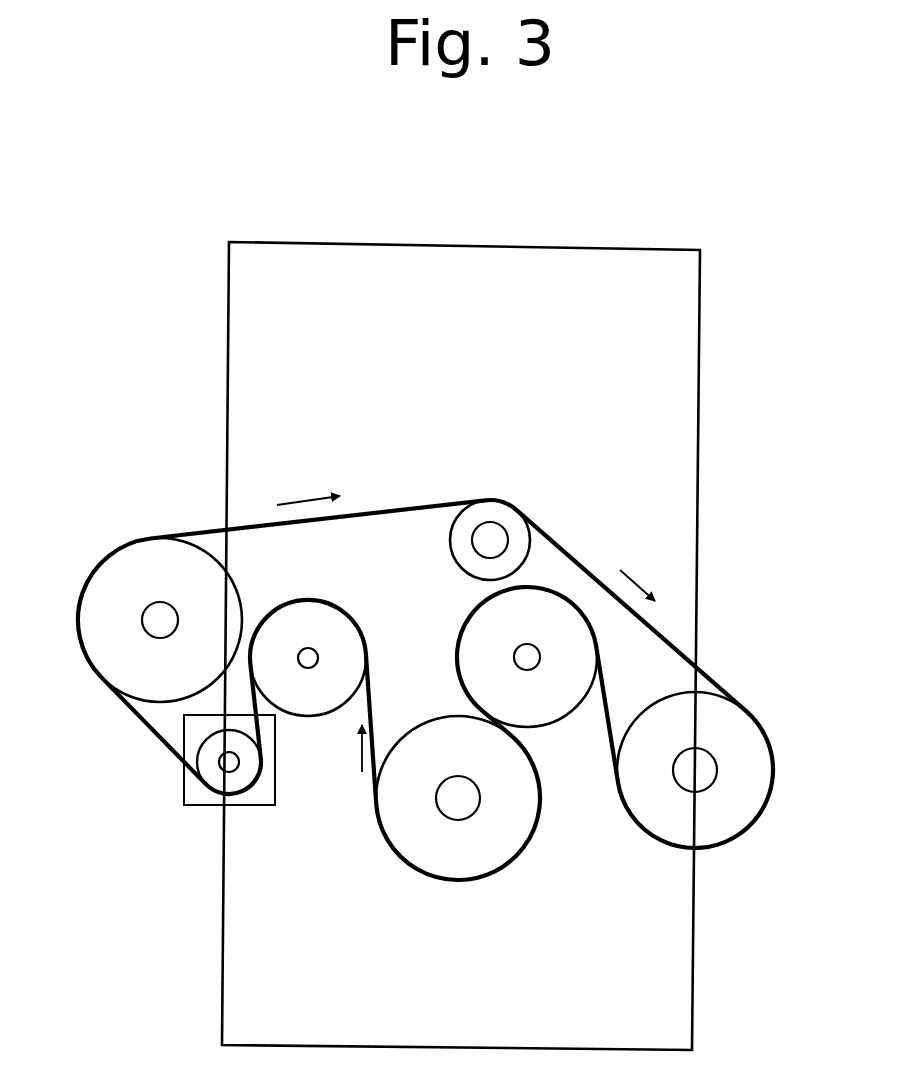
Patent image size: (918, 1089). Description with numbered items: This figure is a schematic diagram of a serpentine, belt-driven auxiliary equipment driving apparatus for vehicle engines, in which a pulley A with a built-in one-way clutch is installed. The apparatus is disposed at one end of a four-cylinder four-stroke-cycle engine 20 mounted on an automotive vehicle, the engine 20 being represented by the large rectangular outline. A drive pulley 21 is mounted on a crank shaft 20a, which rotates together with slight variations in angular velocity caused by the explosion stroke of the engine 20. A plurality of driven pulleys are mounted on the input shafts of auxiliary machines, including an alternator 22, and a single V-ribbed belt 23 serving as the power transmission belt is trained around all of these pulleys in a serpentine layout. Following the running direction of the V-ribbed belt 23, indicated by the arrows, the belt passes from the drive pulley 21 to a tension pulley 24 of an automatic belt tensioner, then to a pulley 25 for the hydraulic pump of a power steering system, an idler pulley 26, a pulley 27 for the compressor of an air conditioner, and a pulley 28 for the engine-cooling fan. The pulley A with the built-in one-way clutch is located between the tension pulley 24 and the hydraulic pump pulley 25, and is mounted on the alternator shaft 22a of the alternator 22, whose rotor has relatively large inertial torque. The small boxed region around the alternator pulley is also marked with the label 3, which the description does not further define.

The engine 20 is at (491, 314).
The crank shaft 20a is at (460, 820).
The drive pulley 21 is at (433, 720).
The alternator 22 is at (181, 788).
The alternator shaft 22a is at (222, 772).
The V-ribbed belt 23 is at (431, 500).
The tension pulley 24 is at (307, 714).
The pulley for a hydraulic pump 25 is at (205, 553).
The idler pulley 26 is at (547, 545).
The pulley for a compressor 27 is at (710, 693).
The pulley for an engine-cooling fan 28 is at (560, 717).
The sheet 3 is at (197, 752).
The pulley with a built-in one-way clutch A is at (197, 740).